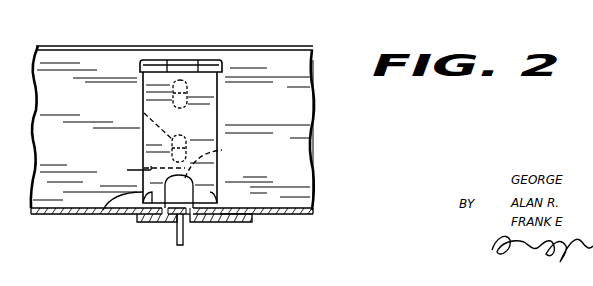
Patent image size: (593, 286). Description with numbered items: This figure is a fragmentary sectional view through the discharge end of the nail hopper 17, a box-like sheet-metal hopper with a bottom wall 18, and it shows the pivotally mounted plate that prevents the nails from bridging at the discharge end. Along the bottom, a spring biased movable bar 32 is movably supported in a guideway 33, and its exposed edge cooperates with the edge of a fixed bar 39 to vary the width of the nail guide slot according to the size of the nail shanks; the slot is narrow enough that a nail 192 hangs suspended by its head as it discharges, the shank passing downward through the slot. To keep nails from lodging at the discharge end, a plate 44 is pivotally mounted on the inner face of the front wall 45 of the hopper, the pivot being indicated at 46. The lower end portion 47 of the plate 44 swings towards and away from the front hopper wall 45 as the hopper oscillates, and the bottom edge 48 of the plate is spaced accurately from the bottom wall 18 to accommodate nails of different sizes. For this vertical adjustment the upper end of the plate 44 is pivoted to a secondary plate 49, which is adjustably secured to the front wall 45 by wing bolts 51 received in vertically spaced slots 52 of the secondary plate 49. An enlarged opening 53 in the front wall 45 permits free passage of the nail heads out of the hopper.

The hopper 17 is at (325, 139).
The bottom wall 18 is at (302, 216).
The movable bar 32 is at (190, 223).
The guideway 33 is at (228, 221).
The fixed bar 39 is at (147, 218).
The plate 44 is at (215, 120).
The front wall 45 is at (300, 72).
The pivot 46 is at (180, 68).
The lower end portion 47 is at (208, 182).
The bottom edge 48 is at (103, 210).
The secondary plate 49 is at (127, 170).
The wing bolts 51 is at (190, 90).
The slots 52 is at (143, 109).
The enlarged opening 53 is at (222, 150).
The nail 192 is at (177, 237).